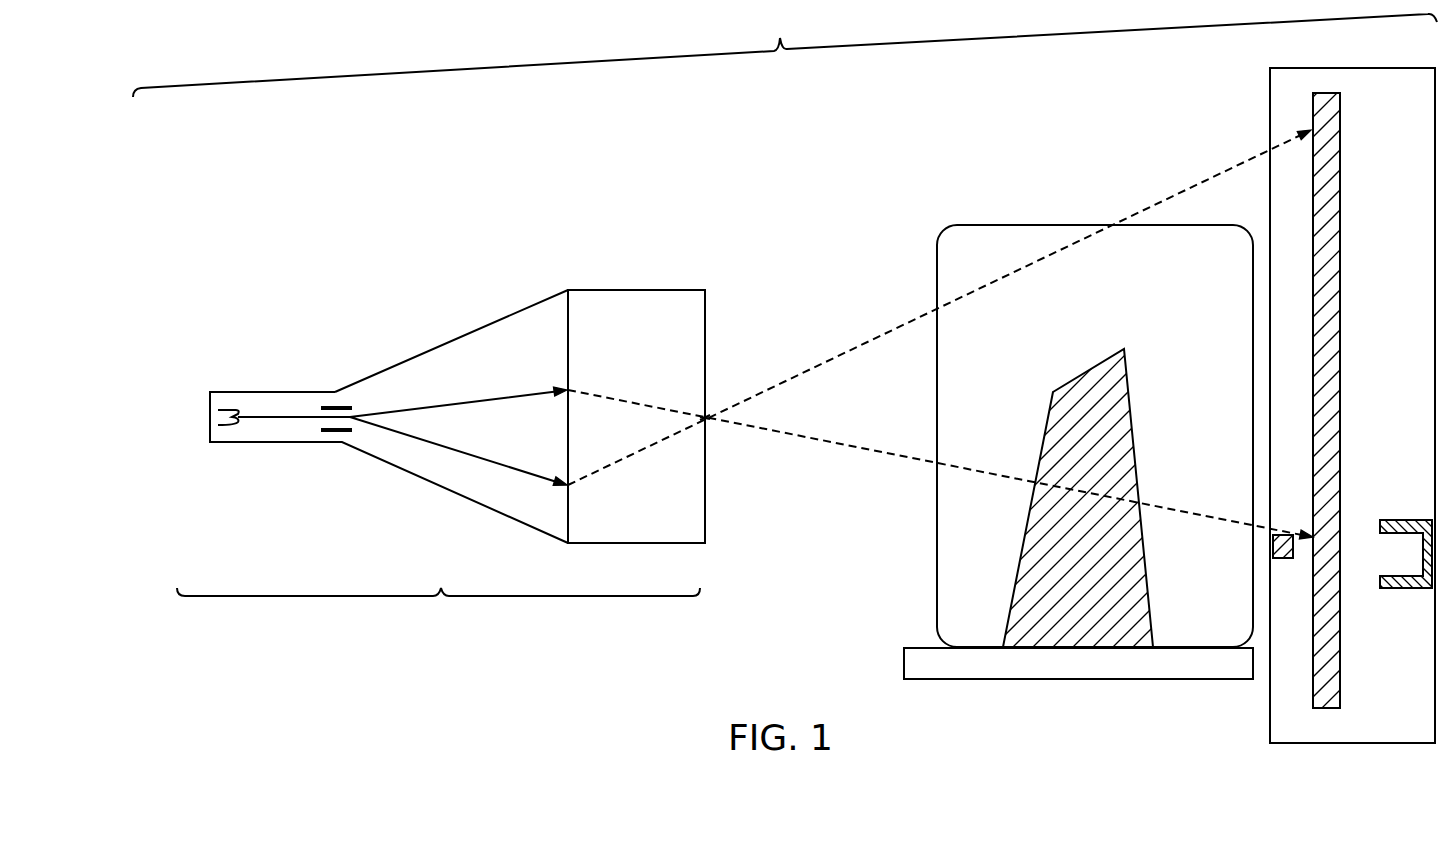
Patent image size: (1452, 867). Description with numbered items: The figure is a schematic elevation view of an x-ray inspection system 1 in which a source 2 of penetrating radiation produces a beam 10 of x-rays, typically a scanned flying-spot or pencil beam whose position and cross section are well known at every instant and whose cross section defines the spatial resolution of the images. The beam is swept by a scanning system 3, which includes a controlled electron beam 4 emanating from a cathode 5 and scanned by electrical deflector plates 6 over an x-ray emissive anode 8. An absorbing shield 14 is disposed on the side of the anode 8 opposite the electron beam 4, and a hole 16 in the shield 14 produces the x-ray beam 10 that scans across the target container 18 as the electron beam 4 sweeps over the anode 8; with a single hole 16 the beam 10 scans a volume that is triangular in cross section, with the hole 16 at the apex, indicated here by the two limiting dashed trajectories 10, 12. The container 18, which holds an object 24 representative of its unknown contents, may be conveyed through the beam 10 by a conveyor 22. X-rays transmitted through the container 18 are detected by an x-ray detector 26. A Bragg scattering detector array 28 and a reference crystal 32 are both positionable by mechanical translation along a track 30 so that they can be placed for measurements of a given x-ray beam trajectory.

The x-ray inspection system 1 is at (781, 36).
The source of penetrating radiation 2 is at (440, 493).
The scanning system 3 is at (441, 600).
The controlled electron beam 4 is at (458, 404).
The cathode 5 is at (232, 410).
The electrical deflector plates 6 is at (319, 433).
The x-ray emissive anode 8 is at (569, 344).
The beam of penetrating radiation 10 is at (832, 446).
The second X-ray beam path 12 is at (826, 360).
The absorbing shield 14 is at (641, 289).
The hole 16 is at (706, 421).
The target container 18 is at (935, 542).
The conveyor 22 is at (1025, 681).
The object 24 is at (1090, 370).
The x-ray detector 26 is at (1330, 92).
The Bragg scattering detector array 28 is at (1418, 590).
The track 30 is at (1292, 745).
The reference crystal 32 is at (1283, 560).